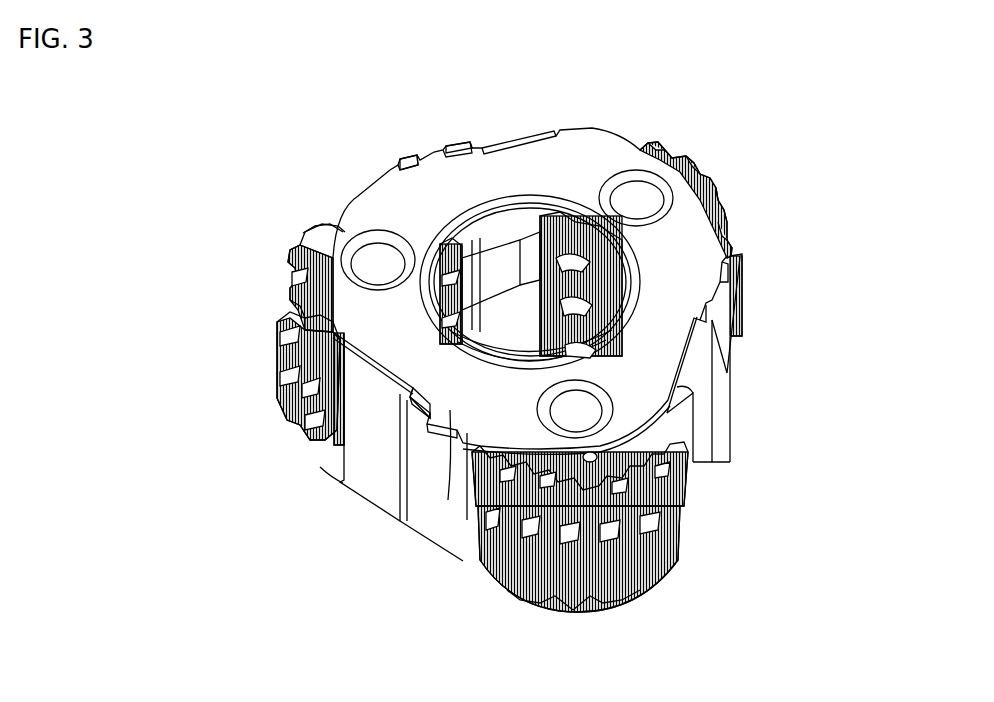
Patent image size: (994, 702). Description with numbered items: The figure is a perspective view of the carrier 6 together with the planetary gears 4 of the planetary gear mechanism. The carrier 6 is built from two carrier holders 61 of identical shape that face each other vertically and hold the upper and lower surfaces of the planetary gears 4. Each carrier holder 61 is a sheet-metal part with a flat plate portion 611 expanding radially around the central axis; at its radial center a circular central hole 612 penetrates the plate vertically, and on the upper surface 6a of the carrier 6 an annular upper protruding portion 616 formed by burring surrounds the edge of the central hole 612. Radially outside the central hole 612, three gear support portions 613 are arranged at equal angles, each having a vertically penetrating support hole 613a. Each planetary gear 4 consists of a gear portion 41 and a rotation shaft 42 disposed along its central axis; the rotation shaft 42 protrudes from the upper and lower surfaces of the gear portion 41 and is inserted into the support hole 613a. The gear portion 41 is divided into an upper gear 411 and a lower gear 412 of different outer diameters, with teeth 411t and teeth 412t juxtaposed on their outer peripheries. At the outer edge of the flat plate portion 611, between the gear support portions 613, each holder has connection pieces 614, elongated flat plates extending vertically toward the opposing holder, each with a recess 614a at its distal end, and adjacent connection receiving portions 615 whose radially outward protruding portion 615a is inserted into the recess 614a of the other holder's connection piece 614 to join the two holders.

The planetary gear 4 is at (488, 375).
The gear portion 41 is at (488, 377).
The upper gear 411 is at (486, 355).
The teeth 411t is at (300, 247).
The lower gear 412 is at (478, 433).
The teeth 412t is at (465, 479).
The rotation shaft 42 is at (585, 277).
The carrier 6 is at (523, 353).
The upper surface 6a is at (465, 182).
The carrier holder 61 is at (523, 353).
The flat plate portion 611 is at (700, 245).
The central hole 612 is at (565, 200).
The gear support portion 613 is at (714, 171).
The support hole 613a is at (673, 203).
The connection piece 614 is at (472, 353).
The recess 614a is at (343, 483).
The connection receiving portion 615 is at (409, 159).
The protruding portion 615a is at (437, 160).
The upper protruding portion 616 is at (625, 335).